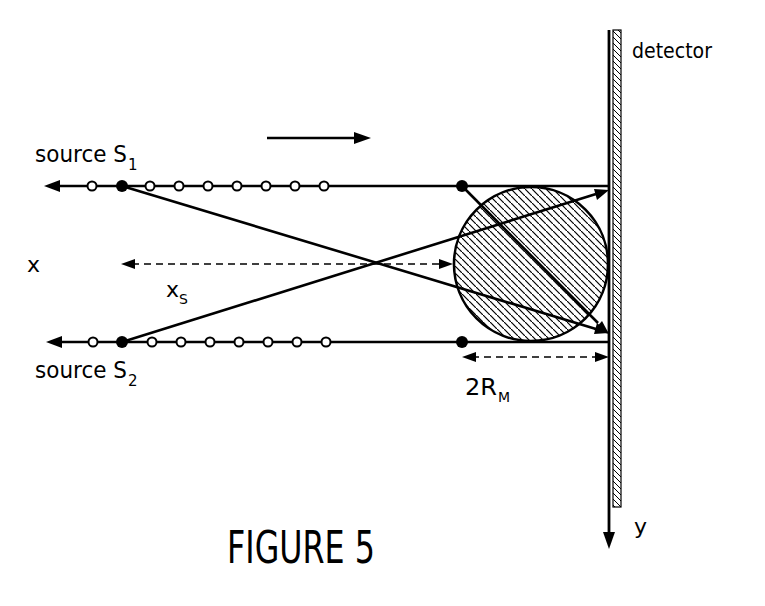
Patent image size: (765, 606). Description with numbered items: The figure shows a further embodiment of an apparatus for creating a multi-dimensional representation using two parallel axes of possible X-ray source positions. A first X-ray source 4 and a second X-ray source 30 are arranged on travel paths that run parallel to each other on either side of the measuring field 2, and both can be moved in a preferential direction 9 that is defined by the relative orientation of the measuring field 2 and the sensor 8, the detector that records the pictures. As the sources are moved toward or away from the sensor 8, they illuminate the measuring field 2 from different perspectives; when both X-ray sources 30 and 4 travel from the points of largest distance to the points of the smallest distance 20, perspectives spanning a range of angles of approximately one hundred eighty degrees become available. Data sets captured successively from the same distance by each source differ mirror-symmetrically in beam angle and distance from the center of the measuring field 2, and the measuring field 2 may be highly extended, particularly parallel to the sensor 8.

The measuring field 2 is at (531, 186).
The first X-ray source 4 is at (123, 184).
The sensor 8 is at (614, 130).
The preferential direction 9 is at (305, 137).
The points of the smallest distance 20 is at (462, 183).
The second X-ray source 30 is at (123, 346).